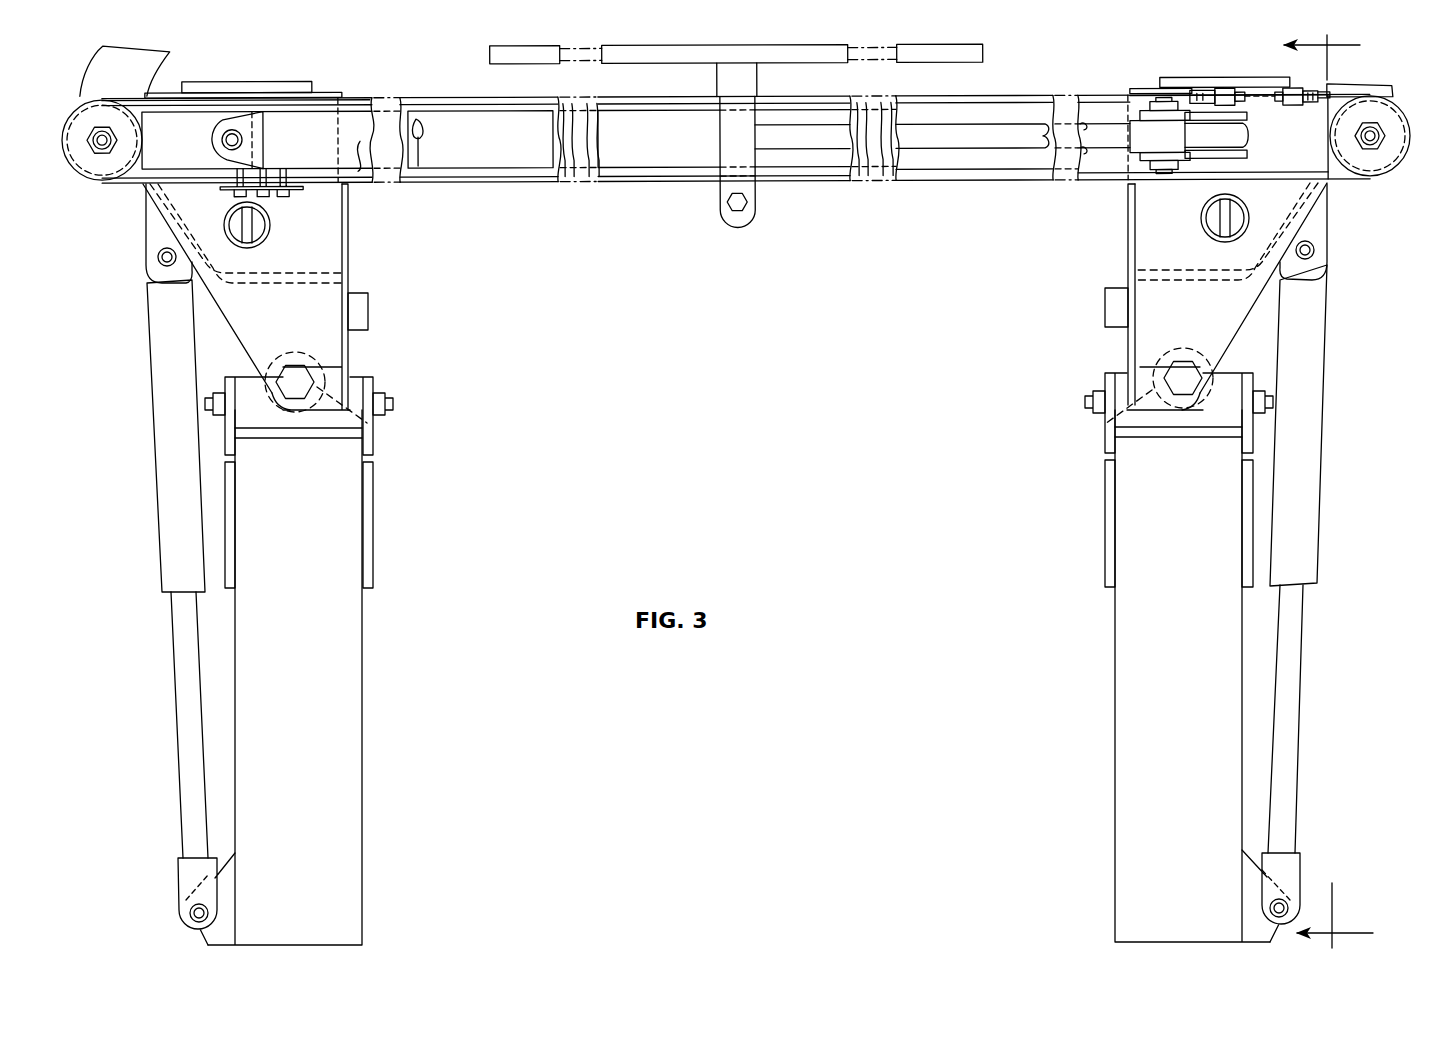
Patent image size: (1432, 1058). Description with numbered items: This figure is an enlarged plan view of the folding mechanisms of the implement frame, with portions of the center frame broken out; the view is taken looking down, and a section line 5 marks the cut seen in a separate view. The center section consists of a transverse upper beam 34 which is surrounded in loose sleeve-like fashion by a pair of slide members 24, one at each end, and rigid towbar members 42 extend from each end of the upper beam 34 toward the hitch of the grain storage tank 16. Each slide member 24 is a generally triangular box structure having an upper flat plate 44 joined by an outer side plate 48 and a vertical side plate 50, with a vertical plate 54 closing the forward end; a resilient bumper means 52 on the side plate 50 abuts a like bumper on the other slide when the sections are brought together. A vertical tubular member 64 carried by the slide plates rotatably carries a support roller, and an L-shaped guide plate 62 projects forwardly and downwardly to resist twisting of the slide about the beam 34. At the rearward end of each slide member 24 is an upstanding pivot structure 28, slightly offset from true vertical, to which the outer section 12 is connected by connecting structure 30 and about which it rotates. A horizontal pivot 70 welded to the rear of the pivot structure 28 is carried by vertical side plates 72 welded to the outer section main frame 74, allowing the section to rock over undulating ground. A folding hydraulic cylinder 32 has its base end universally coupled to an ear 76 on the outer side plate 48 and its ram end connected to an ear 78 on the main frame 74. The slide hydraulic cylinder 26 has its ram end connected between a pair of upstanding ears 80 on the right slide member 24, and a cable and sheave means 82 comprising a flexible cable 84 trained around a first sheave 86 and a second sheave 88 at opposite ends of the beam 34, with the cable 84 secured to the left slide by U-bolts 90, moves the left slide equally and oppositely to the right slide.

The section line 5- 5 is at (1328, 491).
The outer section 12 is at (746, 605).
The grain storage tank 16 is at (975, 52).
The slide member 24 is at (376, 239).
The hydraulic cylinder 26 is at (518, 152).
The pivot structure 28 is at (365, 414).
The connecting structure 30 is at (390, 462).
The hydraulic cylinder 32 is at (177, 528).
The upper beam 34 is at (1086, 112).
The towbar member 42 is at (138, 64).
The upper flat plate 44 is at (293, 323).
The outer side plate 48 is at (193, 238).
The vertical side plate 50 is at (345, 265).
The resilient bumper means 52 is at (363, 318).
The vertical plate 54 is at (322, 91).
The L-shaped guide plate 62 is at (225, 80).
The vertical tubular member 64 is at (268, 228).
The horizontal pivot 70 is at (386, 398).
The vertical side plate 72 is at (365, 547).
The outer section main frame 74 is at (301, 775).
The ear 76 is at (145, 228).
The ear 78 is at (226, 885).
The upstanding ears 80 is at (1247, 150).
The cable and sheave means 82 is at (1288, 70).
The flexible cable 84 is at (186, 104).
The first sheave 86 is at (105, 160).
The second sheave 88 is at (1388, 156).
The U-bolts 90 is at (260, 170).